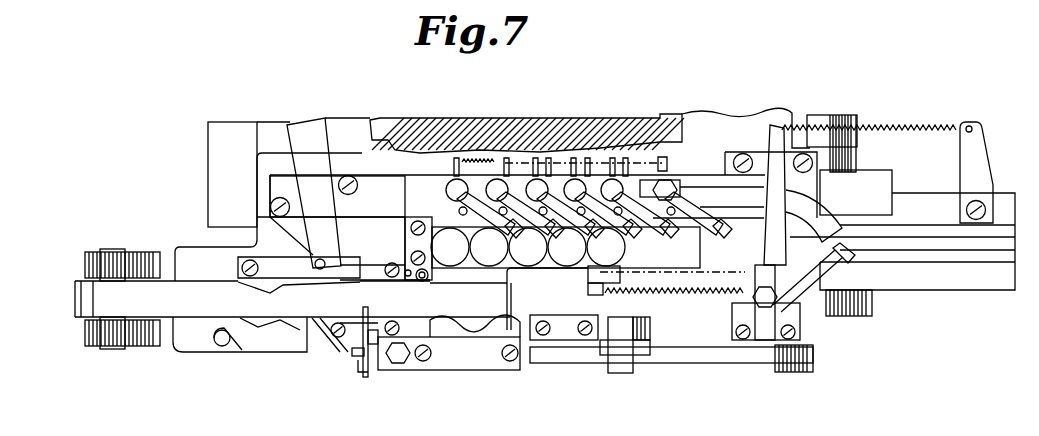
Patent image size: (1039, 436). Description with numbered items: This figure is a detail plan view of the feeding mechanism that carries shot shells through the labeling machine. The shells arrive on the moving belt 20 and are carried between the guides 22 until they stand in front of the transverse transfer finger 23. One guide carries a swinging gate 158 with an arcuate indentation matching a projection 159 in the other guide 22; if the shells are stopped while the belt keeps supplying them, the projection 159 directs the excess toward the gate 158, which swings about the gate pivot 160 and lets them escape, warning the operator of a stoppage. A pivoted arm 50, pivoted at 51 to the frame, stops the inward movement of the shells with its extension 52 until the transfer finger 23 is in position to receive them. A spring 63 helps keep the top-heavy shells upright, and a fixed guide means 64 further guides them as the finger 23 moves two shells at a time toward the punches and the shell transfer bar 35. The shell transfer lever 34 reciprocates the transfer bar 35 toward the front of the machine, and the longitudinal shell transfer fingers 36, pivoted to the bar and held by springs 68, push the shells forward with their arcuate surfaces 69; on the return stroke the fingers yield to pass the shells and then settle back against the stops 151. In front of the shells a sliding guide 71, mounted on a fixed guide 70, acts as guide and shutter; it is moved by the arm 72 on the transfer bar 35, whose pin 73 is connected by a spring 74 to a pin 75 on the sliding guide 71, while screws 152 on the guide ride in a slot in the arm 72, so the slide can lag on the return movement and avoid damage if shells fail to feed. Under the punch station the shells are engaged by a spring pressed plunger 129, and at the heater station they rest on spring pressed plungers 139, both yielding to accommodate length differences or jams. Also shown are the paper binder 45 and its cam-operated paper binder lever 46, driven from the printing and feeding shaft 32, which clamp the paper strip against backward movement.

The moving belt 20 is at (292, 299).
The guides 22 is at (312, 317).
The transverse transfer finger 23 is at (457, 322).
The printing and feeding shaft 32 is at (840, 120).
The shell transfer lever 34 is at (314, 138).
The shell transfer bar 35 is at (411, 187).
The longitudinal shell transfer fingers 36 is at (458, 203).
The paper binder 45 is at (449, 353).
The paper binder lever 46 is at (672, 352).
The pivoted arm 50 is at (355, 353).
The pivot 51 is at (360, 370).
The extension 52 is at (365, 312).
The spring 63 is at (437, 278).
The fixed guide means 64 is at (412, 237).
The springs 68 is at (481, 160).
The arcuate surface 69 is at (676, 240).
The fixed guide 70 is at (566, 256).
The sliding guide 71 is at (606, 247).
The arm 72 is at (766, 244).
The pin 73 is at (590, 287).
The spring 74 is at (673, 298).
The pin 75 is at (748, 292).
The spring pressed plunger 129 is at (488, 255).
The spring pressed plungers 139 is at (529, 262).
The stops 151 is at (455, 205).
The screws 152 is at (615, 296).
The swinging gate 158 is at (247, 338).
The projection 159 is at (285, 290).
The gate pivot 160 is at (215, 340).